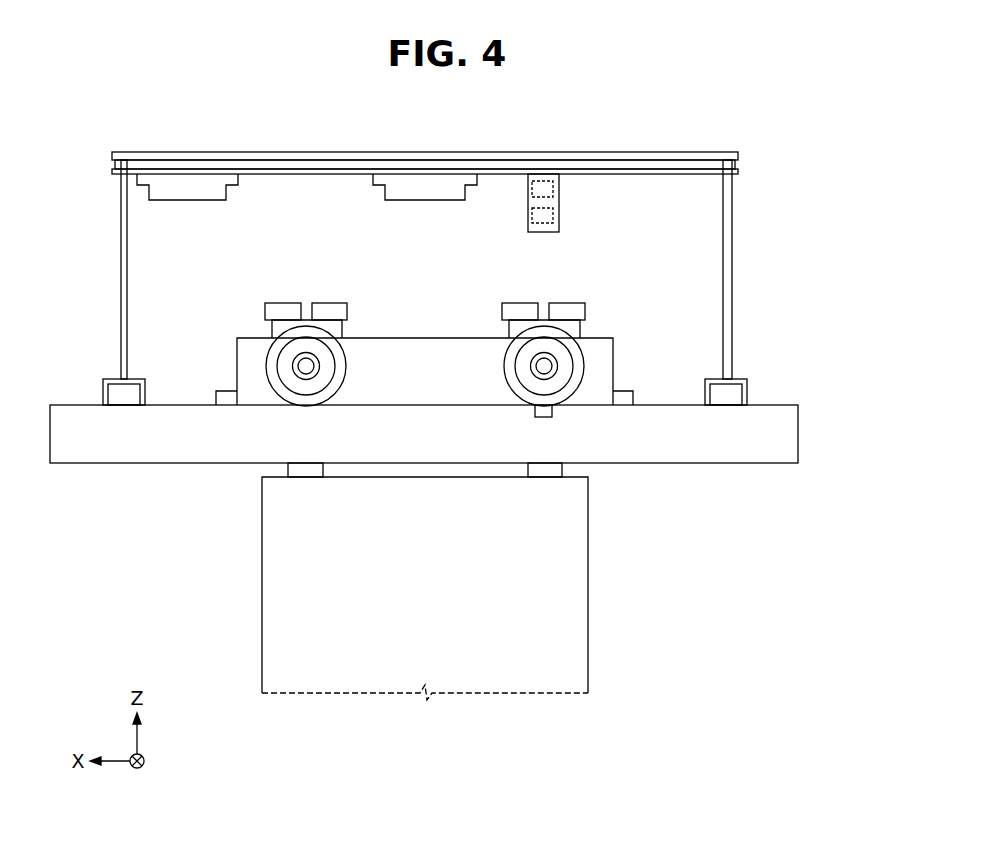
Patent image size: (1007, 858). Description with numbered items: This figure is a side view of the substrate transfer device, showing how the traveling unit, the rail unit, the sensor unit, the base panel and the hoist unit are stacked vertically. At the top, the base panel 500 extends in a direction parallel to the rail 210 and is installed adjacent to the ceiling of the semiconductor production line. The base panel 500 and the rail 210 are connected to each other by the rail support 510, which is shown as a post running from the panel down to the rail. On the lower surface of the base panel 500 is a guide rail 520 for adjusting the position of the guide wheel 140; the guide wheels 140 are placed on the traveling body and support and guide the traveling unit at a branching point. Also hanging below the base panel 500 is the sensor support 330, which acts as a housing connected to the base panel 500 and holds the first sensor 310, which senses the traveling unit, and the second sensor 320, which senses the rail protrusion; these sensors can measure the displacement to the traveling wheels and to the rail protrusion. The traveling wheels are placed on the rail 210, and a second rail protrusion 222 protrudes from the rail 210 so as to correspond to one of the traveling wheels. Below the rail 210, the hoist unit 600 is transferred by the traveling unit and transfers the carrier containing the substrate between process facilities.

The base panel 500 is at (673, 158).
The rail support 510 is at (121, 240).
The guide rail 520 is at (149, 192).
The first sensor 310 is at (530, 189).
The second sensor 320 is at (553, 215).
The sensor support 330 is at (547, 181).
The guide wheels 140 is at (265, 315).
The rail 210 is at (798, 437).
The second rail protrusion 222 is at (545, 418).
The hoist unit 600 is at (275, 597).